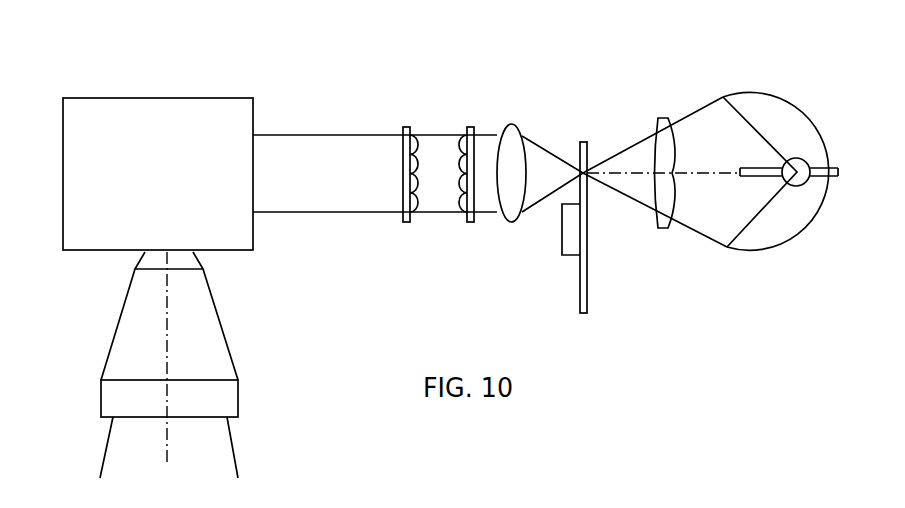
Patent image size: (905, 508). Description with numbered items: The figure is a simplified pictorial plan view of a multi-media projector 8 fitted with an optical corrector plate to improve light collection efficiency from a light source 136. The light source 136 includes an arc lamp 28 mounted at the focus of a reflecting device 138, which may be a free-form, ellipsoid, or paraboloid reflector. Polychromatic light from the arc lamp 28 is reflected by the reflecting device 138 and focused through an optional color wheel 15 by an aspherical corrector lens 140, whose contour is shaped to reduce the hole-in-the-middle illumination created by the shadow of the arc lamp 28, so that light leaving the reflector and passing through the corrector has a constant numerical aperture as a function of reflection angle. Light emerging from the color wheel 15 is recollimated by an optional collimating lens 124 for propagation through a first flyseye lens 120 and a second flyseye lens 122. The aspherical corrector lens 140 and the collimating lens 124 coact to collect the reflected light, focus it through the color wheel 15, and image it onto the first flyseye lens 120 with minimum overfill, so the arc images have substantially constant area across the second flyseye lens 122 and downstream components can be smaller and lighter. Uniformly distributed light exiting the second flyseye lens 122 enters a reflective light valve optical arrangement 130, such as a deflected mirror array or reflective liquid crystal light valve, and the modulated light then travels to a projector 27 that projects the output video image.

The multi-media projector 8 is at (75, 326).
The color wheel 15 is at (585, 303).
The projector 27 is at (227, 403).
The arc lamp 28 is at (800, 157).
The first flyseye lens 120 is at (474, 126).
The second flyseye lens 122 is at (407, 126).
The collimating lens 124 is at (508, 202).
The reflective light valve optical arrangement 130 is at (133, 115).
The light source 136 is at (791, 155).
The reflecting device 138 is at (773, 238).
The aspherical corrector lens 140 is at (661, 123).